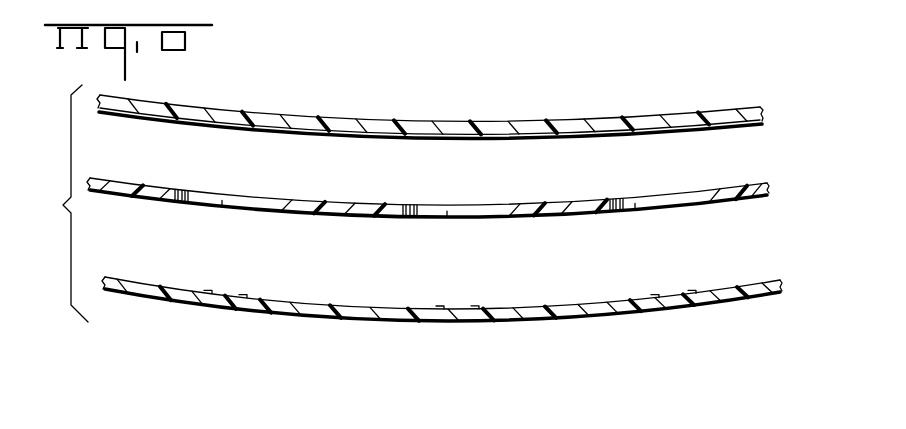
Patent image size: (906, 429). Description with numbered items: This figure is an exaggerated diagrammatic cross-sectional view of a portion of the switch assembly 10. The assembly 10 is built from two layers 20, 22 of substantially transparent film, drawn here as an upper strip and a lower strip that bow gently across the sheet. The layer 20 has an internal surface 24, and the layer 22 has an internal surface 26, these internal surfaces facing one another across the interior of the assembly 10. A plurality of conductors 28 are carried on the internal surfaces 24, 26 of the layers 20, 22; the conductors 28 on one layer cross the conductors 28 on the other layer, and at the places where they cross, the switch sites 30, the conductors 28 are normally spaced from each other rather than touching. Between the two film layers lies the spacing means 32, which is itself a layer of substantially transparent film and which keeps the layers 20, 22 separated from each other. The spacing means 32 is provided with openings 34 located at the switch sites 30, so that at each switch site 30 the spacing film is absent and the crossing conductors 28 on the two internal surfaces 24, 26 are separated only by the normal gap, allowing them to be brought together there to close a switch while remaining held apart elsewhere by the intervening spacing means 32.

The assembly 10 is at (545, 89).
The layer 20 is at (342, 118).
The layer 22 is at (255, 312).
The internal surface 24 is at (379, 137).
The internal surface 26 is at (315, 302).
The conductors 28 is at (517, 143).
The switch sites 30 is at (221, 282).
The spacing means 32 is at (300, 202).
The openings 34 is at (200, 190).